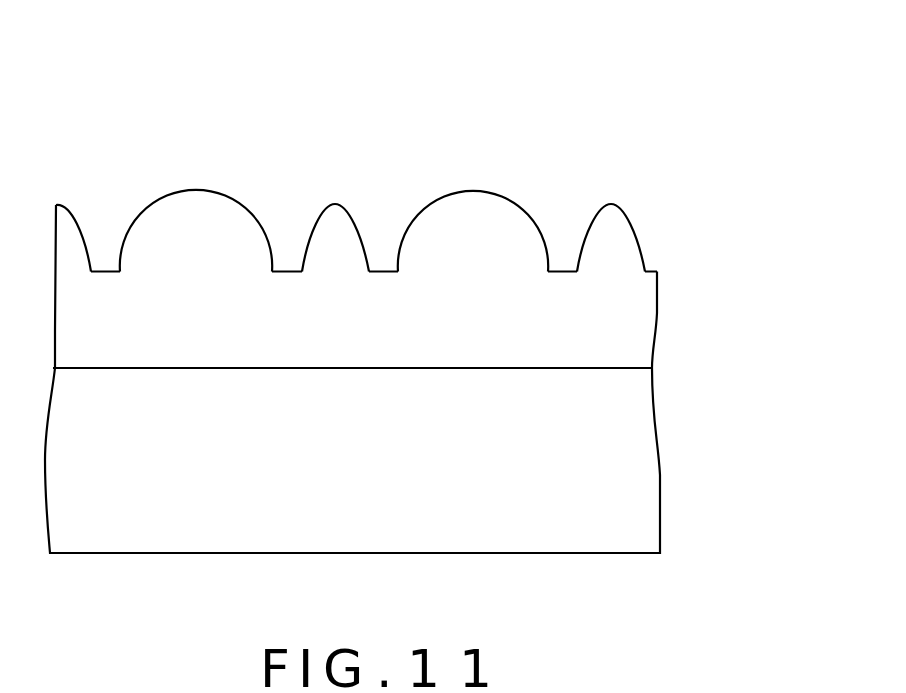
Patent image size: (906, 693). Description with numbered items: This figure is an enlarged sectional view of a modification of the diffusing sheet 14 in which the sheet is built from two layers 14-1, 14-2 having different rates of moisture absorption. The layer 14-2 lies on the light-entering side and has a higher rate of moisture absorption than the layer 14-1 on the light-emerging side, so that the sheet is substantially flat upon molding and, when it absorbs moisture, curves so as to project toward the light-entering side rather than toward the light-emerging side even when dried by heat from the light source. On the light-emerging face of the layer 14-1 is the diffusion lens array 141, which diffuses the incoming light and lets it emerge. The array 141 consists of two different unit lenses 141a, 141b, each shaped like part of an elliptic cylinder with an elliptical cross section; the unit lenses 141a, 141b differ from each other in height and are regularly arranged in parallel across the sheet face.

The diffusing sheet 14 is at (424, 295).
The layer 14-1 is at (428, 202).
The layer 14-2 is at (637, 458).
The diffusion lens array 141 is at (356, 154).
The unit lens 141a is at (165, 115).
The unit lens 141b is at (226, 198).